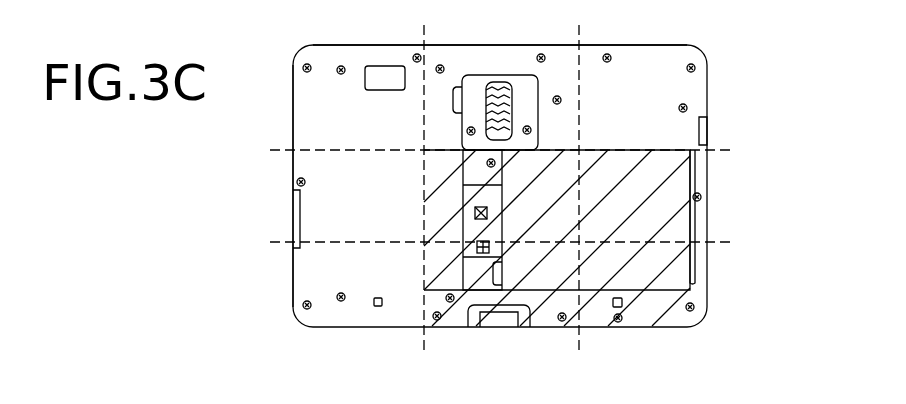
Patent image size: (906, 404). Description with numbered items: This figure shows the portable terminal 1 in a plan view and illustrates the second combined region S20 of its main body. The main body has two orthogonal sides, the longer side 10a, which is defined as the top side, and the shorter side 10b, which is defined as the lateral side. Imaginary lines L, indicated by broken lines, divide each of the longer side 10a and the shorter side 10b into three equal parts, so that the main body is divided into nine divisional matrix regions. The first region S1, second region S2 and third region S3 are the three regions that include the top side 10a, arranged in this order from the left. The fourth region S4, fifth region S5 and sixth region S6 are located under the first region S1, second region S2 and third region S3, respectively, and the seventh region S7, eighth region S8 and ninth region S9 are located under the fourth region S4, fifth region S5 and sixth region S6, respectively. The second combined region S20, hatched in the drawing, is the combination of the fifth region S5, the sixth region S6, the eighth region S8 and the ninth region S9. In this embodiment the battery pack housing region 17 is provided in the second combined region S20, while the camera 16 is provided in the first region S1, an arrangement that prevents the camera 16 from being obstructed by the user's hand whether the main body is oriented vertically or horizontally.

The electronic device 1 is at (678, 46).
The longer side 10a is at (598, 46).
The shorter side 10b is at (292, 103).
The camera 16 is at (386, 76).
The battery pack housing region 17 is at (668, 273).
The imaginary lines L is at (511, 180).
The first region S1 is at (362, 88).
The second region S2 is at (505, 102).
The third region S3 is at (649, 98).
The fourth region S4 is at (337, 192).
The fifth region S5 is at (513, 220).
The sixth region S6 is at (673, 184).
The seventh region S7 is at (342, 283).
The eighth region S8 is at (499, 288).
The ninth region S9 is at (653, 287).
The second combined region S20 is at (658, 209).